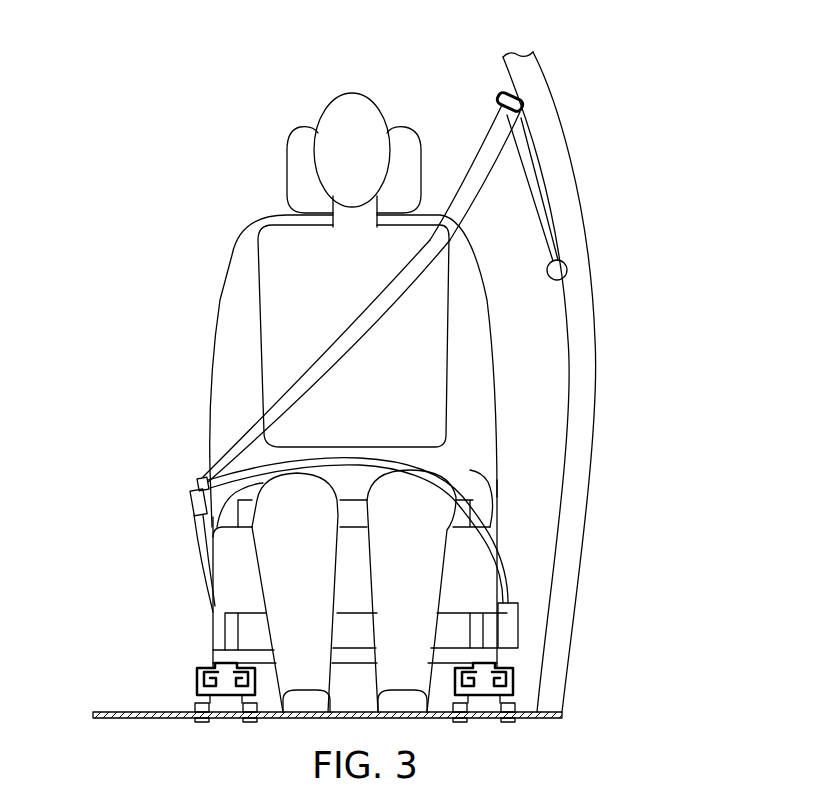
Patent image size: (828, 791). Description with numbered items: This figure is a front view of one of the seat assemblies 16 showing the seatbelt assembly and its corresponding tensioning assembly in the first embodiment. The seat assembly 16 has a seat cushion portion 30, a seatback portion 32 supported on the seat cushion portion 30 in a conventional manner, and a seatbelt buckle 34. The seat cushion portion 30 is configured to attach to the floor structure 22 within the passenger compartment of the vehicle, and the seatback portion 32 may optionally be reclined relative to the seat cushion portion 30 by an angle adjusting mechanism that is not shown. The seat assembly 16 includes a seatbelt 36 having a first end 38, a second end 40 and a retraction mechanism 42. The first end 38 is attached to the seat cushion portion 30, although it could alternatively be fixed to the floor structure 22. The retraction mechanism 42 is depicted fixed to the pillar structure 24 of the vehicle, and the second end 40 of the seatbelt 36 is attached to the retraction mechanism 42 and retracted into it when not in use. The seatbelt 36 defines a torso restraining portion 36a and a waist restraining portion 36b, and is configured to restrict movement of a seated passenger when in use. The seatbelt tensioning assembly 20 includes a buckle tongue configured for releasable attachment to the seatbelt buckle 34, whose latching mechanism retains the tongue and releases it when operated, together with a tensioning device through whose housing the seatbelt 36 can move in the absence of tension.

The seat assembly 16 is at (270, 208).
The seatbelt tensioning assembly 20 is at (198, 484).
The floor structure 22 is at (140, 712).
The pillar structure 24 is at (583, 300).
The seat cushion portion 30 is at (240, 570).
The seatback portion 32 is at (240, 332).
The seatbelt buckle 34 is at (192, 502).
The seatbelt 36 is at (362, 312).
The torso restraining portion 36a is at (340, 350).
The waist restraining portion 36b is at (374, 466).
The first end 38 is at (510, 590).
The second end 40 is at (553, 236).
The retraction mechanism 42 is at (552, 274).